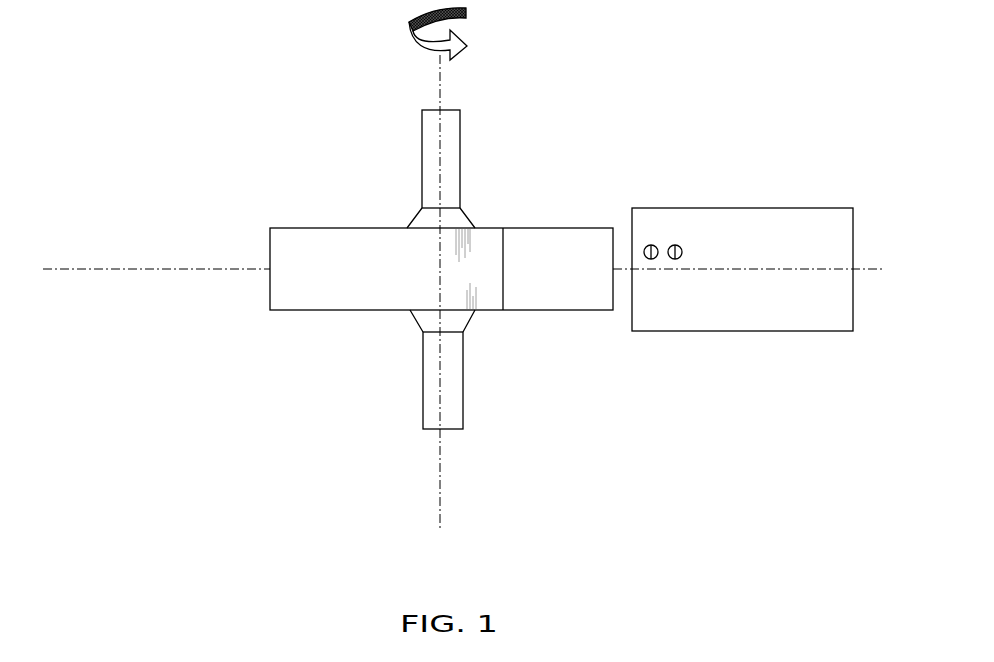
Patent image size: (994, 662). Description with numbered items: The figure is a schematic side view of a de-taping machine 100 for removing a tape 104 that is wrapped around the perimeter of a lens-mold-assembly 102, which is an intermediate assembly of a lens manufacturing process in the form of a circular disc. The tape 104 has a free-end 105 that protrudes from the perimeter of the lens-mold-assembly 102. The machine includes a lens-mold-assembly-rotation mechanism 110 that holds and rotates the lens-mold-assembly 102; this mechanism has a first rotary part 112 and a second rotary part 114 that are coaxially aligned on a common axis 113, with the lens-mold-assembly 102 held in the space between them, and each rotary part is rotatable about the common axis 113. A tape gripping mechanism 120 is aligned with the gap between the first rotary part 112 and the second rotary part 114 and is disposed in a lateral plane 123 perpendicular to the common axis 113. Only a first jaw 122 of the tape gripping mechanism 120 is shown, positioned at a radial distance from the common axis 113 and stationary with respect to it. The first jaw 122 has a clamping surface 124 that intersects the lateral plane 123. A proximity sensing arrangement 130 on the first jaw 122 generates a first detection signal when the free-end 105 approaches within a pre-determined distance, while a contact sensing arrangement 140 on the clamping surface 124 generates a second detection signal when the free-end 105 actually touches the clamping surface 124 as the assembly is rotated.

The de-taping machine 100 is at (737, 68).
The lens-mold-assembly 102 is at (547, 228).
The tape 104 is at (483, 243).
The free-end 105 is at (502, 278).
The lens-mold-assembly-rotation mechanism 110 is at (340, 249).
The first rotary part 112 is at (433, 187).
The common axis 113 is at (440, 68).
The second rotary part 114 is at (432, 397).
The tape gripping mechanism 120 is at (738, 217).
The first jaw 122 is at (753, 222).
The lateral plane 123 is at (868, 268).
The clamping surface 124 is at (765, 261).
The proximity sensing arrangement 130 is at (675, 245).
The contact sensing arrangement 140 is at (650, 245).